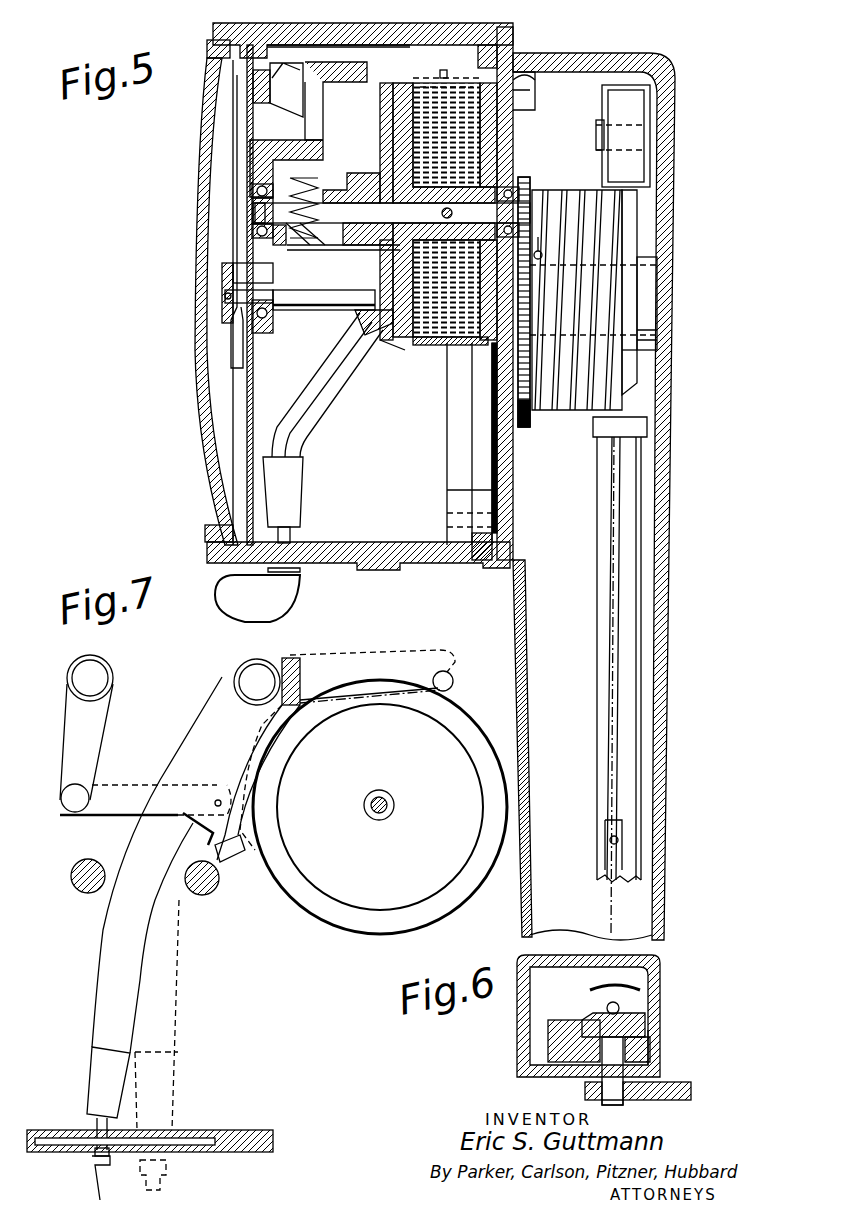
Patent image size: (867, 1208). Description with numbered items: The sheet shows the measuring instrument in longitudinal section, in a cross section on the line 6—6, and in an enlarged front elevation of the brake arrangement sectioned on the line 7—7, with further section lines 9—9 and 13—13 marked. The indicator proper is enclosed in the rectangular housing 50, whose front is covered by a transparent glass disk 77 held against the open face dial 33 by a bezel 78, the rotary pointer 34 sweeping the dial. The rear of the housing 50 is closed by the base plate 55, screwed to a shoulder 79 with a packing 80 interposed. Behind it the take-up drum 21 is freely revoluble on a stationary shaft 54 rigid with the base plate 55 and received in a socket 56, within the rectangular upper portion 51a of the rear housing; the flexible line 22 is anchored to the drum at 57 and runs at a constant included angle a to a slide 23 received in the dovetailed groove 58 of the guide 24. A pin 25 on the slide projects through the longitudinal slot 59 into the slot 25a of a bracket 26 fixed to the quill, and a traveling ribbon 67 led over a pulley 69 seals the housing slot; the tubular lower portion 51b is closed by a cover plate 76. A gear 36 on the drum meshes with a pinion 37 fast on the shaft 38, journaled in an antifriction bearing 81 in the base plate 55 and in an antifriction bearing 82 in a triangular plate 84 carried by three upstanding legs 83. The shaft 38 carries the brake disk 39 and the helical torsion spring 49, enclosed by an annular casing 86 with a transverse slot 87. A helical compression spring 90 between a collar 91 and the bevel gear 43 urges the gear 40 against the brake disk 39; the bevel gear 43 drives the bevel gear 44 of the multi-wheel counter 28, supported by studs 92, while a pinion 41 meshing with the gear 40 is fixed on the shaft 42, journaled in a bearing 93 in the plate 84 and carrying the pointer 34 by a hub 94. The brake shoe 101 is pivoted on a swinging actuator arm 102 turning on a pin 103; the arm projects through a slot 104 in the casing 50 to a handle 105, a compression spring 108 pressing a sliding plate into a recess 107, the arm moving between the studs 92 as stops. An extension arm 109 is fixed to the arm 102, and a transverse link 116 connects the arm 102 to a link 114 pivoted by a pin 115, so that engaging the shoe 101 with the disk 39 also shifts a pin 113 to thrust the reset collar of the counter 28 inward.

In FIG. 5, the rectangular housing 50 is at (232, 17).
In FIG. 7, the rectangular housing 50 is at (248, 1130).
In FIG. 5, the rotary pointer 34 is at (206, 168).
In FIG. 5, the open face dial 33 is at (247, 405).
In FIG. 5, the antifriction bearing 82 is at (248, 228).
In FIG. 5, the triangular plate 84 is at (298, 130).
In FIG. 5, the extension arm 109 is at (260, 104).
In FIG. 7, the extension arm 109 is at (333, 647).
In FIG. 5, the upstanding legs 83 is at (383, 70).
In FIG. 5, the bevel gear 44 is at (302, 199).
In FIG. 5, the bevel gear 43 is at (330, 186).
In FIG. 5, the multi-wheel type revolution counter 28 is at (340, 262).
In FIG. 5, the collar 91 is at (284, 240).
In FIG. 5, the helical compression spring 90 is at (326, 240).
In FIG. 5, the shaft 38 is at (368, 245).
In FIG. 7, the shaft 38 is at (380, 821).
In FIG. 5, the transparent glass disk 77 is at (250, 212).
In FIG. 5, the hub 94 is at (222, 274).
In FIG. 5, the antifriction bearing 93 is at (280, 316).
In FIG. 5, the shaft 42 is at (314, 311).
In FIG. 5, the pinion 41 is at (357, 312).
In FIG. 5, the helical torsion spring 49 is at (385, 130).
In FIG. 5, the gear 40 is at (395, 148).
In FIG. 5, the brake disk 39 is at (417, 90).
In FIG. 7, the brake disk 39 is at (337, 911).
In FIG. 5, the annular casing 86 is at (444, 338).
In FIG. 5, the base plate 55 is at (512, 127).
In FIG. 5, the transverse slot 87 is at (532, 84).
In FIG. 5, the upper portion of rear housing 51a is at (673, 171).
In FIG. 5, the pulley 69 is at (604, 107).
In FIG. 5, the section line 9 is at (648, 54).
In FIG. 5, the section line 7— 7 is at (395, 14).
In FIG. 5, the antifriction bearing 81 is at (512, 159).
In FIG. 5, the gear 36 is at (525, 180).
In FIG. 5, the pinion 37 is at (531, 205).
In FIG. 5, the tape anchorage 57 is at (539, 240).
In FIG. 5, the take-up drum 21 is at (625, 211).
In FIG. 5, the socket 56 is at (660, 258).
In FIG. 5, the stationary shaft 54 is at (660, 267).
In FIG. 5, the flexible line 22 is at (595, 569).
In FIG. 5, the included angle a is at (622, 650).
In FIG. 5, the traveling medium 67 is at (599, 854).
In FIG. 6, the traveling medium 67 is at (590, 987).
In FIG. 5, the lower portion of rear housing 51b is at (668, 689).
In FIG. 6, the lower portion of rear housing 51b is at (658, 1036).
In FIG. 5, the shoulder 79 is at (450, 537).
In FIG. 5, the packing 80 is at (479, 560).
In FIG. 5, the bezel 78 is at (207, 531).
In FIG. 5, the swinging actuator arm 102 is at (318, 419).
In FIG. 7, the swinging actuator arm 102 is at (93, 991).
In FIG. 5, the handle 105 is at (298, 601).
In FIG. 7, the handle 105 is at (92, 1184).
In FIG. 5, the section line 6— 6 is at (497, 840).
In FIG. 5, the section line 13 is at (497, 900).
In FIG. 7, the pin 103 is at (249, 671).
In FIG. 7, the pin 115 is at (104, 671).
In FIG. 7, the link 114 is at (90, 734).
In FIG. 7, the pin 113 is at (73, 807).
In FIG. 7, the transverse link 116 is at (123, 785).
In FIG. 7, the studs 92 is at (83, 893).
In FIG. 7, the brake shoe 101 is at (227, 864).
In FIG. 7, the compression spring 108 is at (86, 1154).
In FIG. 7, the slot 104 is at (93, 1129).
In FIG. 7, the recess 107 is at (210, 1151).
In FIG. 6, the cover plate 76 is at (517, 1042).
In FIG. 6, the guide 24 is at (548, 1029).
In FIG. 6, the groove 58 is at (604, 1018).
In FIG. 6, the slide 23 is at (638, 1016).
In FIG. 6, the longitudinal slot 59 is at (602, 1084).
In FIG. 6, the pin 25 is at (588, 1094).
In FIG. 6, the bracket 26 is at (676, 1089).
In FIG. 6, the slot 25a is at (628, 1104).